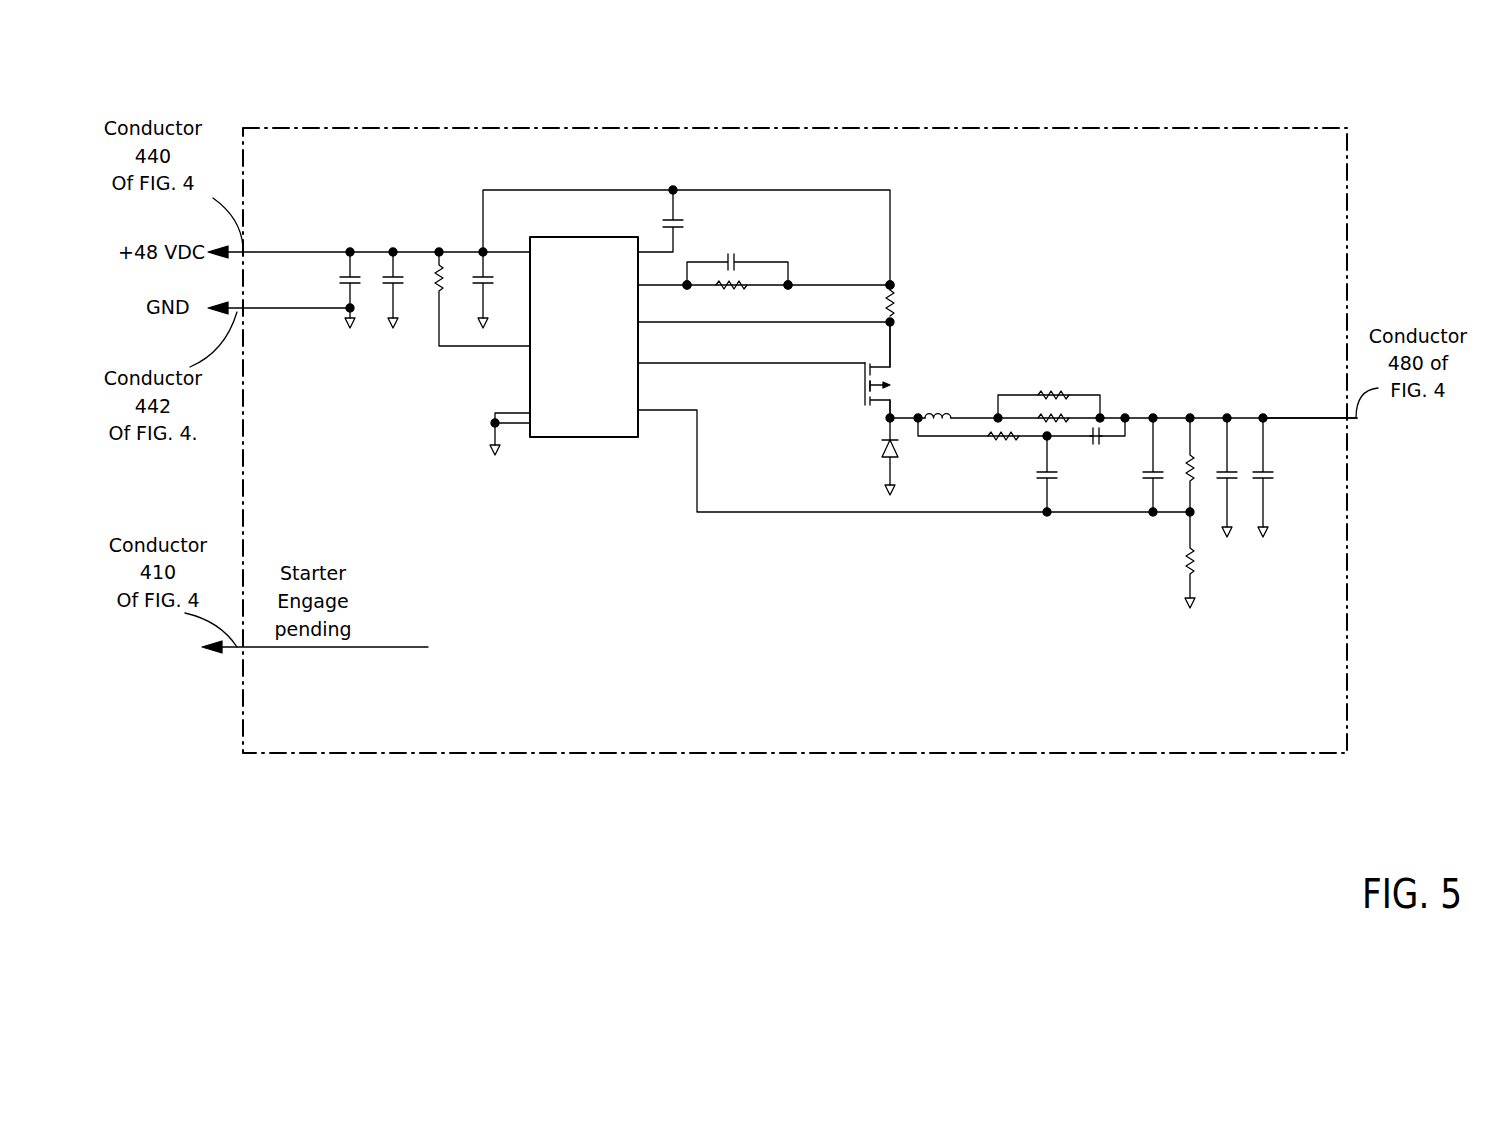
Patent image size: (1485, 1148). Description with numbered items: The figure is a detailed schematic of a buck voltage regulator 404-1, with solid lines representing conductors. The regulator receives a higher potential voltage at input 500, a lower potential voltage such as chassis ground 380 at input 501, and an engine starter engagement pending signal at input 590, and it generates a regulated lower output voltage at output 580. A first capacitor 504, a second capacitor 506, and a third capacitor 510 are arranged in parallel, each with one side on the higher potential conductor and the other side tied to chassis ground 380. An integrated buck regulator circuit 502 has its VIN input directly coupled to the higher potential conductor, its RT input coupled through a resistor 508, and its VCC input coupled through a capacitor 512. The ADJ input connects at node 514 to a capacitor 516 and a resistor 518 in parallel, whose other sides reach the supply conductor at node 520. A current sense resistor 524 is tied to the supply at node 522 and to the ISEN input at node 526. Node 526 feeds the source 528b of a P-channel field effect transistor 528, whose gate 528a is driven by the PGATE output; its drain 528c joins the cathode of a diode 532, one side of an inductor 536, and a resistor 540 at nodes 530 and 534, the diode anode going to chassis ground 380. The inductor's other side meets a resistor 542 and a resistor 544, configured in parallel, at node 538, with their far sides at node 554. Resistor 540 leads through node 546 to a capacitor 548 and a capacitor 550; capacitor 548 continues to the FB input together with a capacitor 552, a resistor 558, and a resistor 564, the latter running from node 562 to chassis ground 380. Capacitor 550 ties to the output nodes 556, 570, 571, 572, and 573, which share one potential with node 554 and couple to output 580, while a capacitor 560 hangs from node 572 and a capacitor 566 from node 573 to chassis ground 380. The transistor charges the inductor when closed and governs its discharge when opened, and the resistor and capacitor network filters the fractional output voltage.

The buck voltage regulator 404-1 is at (752, 128).
The input 500 is at (252, 237).
The input 501 is at (252, 317).
The integrated buck regulator circuit 502 is at (594, 225).
The first capacitor 504 is at (341, 282).
The second capacitor 506 is at (386, 283).
The resistor 508 is at (432, 278).
The third capacitor 510 is at (478, 284).
The capacitor 512 is at (665, 227).
The node 514 is at (687, 288).
The capacitor 516 is at (736, 270).
The resistor 518 is at (754, 297).
The node 520 is at (797, 292).
The node 522 is at (896, 282).
The current sense resistor 524 is at (896, 303).
The node 526 is at (896, 324).
The P-channel field effect transistor 528 is at (854, 370).
The gate 528a is at (860, 387).
The source 528b is at (907, 355).
The drain 528c is at (880, 412).
The node 530 is at (884, 424).
The diode 532 is at (898, 448).
The node 534 is at (918, 412).
The inductor 536 is at (945, 412).
The node 538 is at (995, 412).
The resistor 540 is at (995, 442).
The resistor 542 is at (1050, 389).
The resistor 544 is at (1054, 414).
The node 546 is at (1051, 440).
The capacitor 548 is at (1054, 474).
The capacitor 550 is at (1102, 442).
The capacitor 552 is at (1143, 478).
The node 554 is at (1101, 412).
The node 556 is at (1126, 412).
The resistor 558 is at (1186, 470).
The capacitor 560 is at (1218, 478).
The node 562 is at (1180, 520).
The resistor 564 is at (1196, 563).
The capacitor 566 is at (1254, 478).
The node 570 is at (1162, 402).
The node 571 is at (1191, 412).
The node 572 is at (1236, 400).
The node 573 is at (1265, 412).
The output 580 is at (1340, 412).
The input 590 is at (248, 653).
The chassis ground 380 is at (1274, 546).